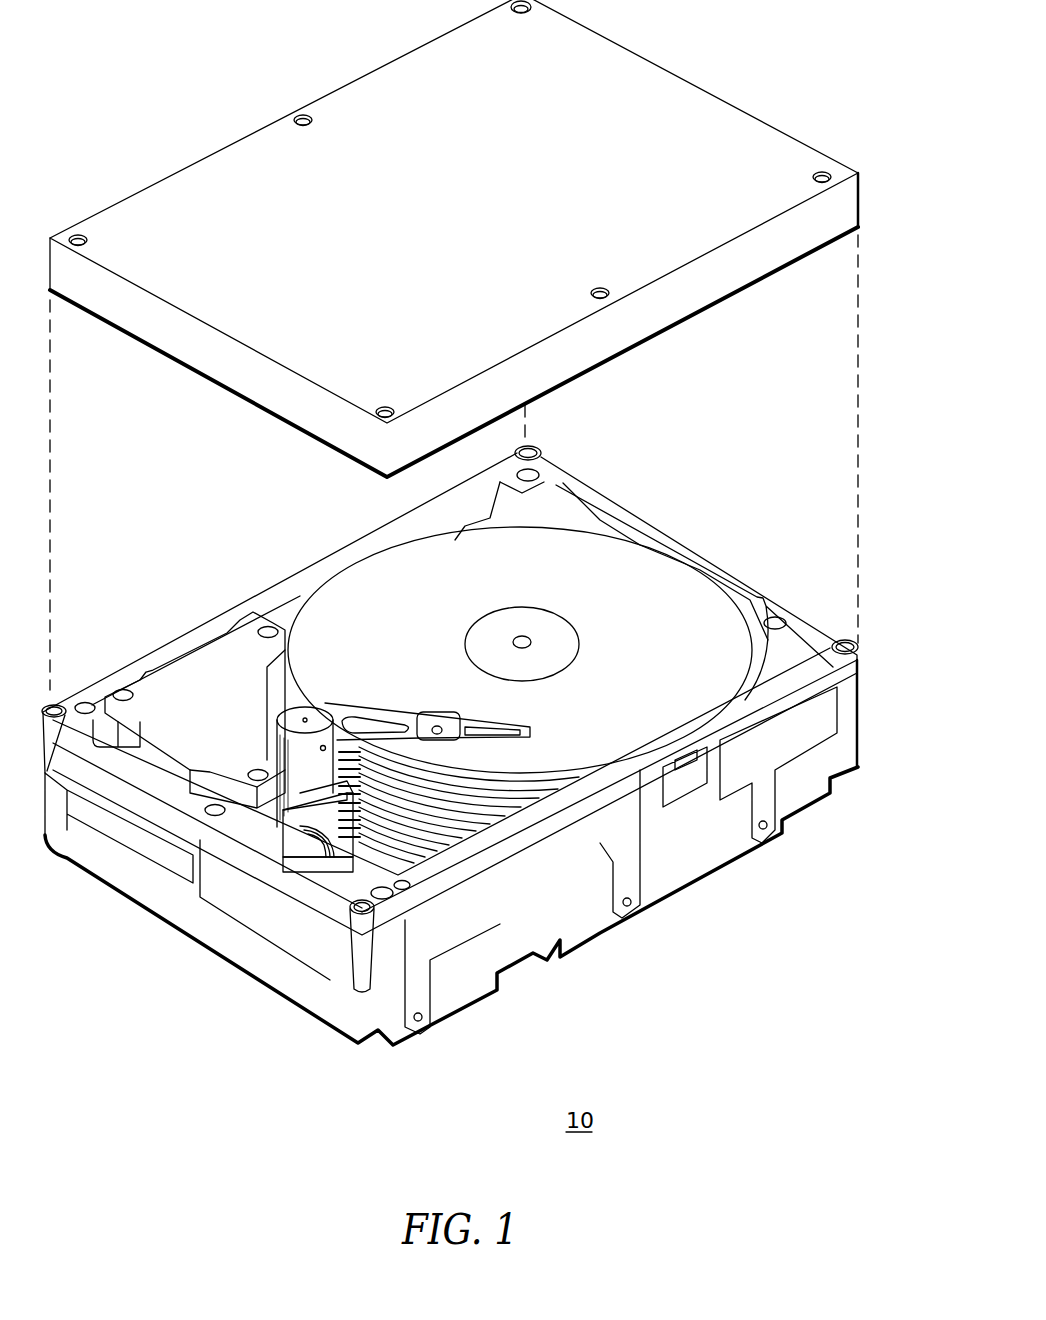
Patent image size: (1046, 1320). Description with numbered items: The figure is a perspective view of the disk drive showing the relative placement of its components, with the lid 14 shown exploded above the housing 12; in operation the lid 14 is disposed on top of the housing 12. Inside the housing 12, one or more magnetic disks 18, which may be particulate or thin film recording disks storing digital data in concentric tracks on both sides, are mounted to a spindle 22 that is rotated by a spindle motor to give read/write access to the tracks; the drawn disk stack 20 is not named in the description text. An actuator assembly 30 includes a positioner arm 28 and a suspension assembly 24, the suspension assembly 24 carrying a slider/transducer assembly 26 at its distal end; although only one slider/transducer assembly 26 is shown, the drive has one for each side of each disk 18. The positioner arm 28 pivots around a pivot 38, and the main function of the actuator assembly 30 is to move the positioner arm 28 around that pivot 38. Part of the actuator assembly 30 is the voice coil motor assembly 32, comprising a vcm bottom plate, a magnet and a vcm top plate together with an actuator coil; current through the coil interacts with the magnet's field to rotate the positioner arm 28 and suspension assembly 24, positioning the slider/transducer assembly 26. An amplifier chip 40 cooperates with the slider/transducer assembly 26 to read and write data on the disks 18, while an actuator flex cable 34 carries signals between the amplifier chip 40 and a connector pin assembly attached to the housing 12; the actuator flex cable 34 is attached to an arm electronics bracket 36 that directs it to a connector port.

The housing 12 is at (465, 990).
The lid 14 is at (840, 211).
The magnetic disks 18 is at (658, 568).
The disc stack 20 is at (440, 790).
The spindle 22 is at (530, 637).
The suspension assembly 24 is at (460, 722).
The slider/transducer assembly 26 is at (532, 731).
The positioner arm 28 is at (500, 764).
The actuator assembly 30 is at (303, 754).
The voice coil motor assembly 32 is at (193, 673).
The actuator flex cable 34 is at (313, 852).
The arm electronics bracket 36 is at (337, 890).
The pivot 38 is at (305, 719).
The amplifier chip 40 is at (392, 840).